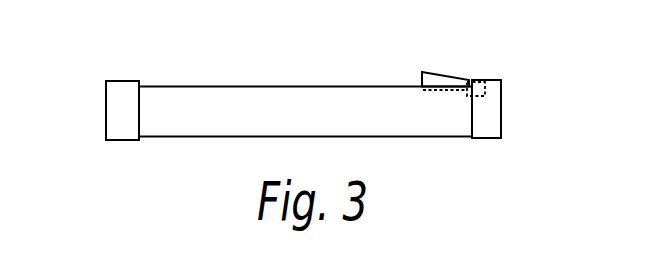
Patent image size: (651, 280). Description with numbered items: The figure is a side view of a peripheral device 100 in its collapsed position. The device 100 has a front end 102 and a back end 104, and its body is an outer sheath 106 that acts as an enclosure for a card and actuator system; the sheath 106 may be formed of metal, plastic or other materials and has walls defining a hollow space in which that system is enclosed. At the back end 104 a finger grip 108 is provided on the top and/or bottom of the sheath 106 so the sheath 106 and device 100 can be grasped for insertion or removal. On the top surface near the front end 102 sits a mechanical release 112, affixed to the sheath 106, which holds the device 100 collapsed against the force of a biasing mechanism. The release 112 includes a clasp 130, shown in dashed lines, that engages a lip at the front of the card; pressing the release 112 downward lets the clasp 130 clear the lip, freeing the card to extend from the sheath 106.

The peripheral device 100 is at (118, 172).
The front end 102 is at (507, 130).
The back end 104 is at (106, 125).
The outer sheath 106 is at (280, 86).
The finger grip 108 is at (128, 80).
The mechanical release 112 is at (440, 73).
The clasp 130 is at (473, 92).